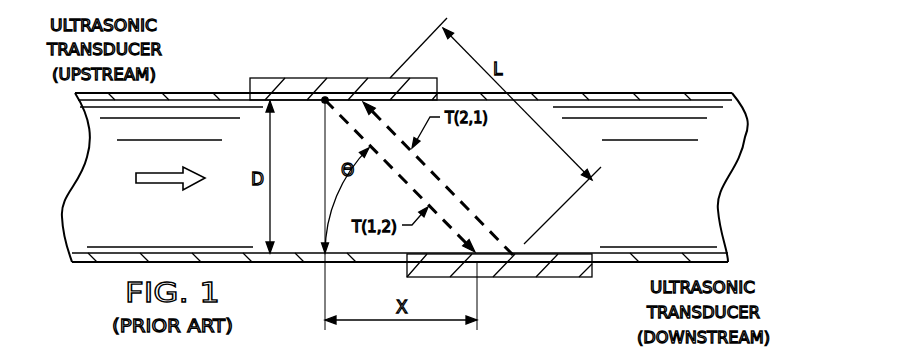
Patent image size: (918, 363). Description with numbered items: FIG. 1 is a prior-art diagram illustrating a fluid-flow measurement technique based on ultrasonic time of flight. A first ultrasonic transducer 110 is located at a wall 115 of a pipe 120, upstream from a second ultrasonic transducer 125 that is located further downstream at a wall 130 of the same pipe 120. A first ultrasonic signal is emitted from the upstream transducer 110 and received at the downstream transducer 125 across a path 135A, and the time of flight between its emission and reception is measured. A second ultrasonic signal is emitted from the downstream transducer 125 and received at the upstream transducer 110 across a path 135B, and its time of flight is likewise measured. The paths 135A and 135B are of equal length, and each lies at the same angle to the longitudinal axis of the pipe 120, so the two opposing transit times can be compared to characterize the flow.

The first ultrasonic transducer 110 is at (305, 78).
The wall 115 is at (193, 100).
The pipe 120 is at (85, 157).
The second ultrasonic transducer 125 is at (507, 278).
The wall 130 is at (617, 262).
The path 135A is at (487, 197).
The path 135B is at (447, 176).